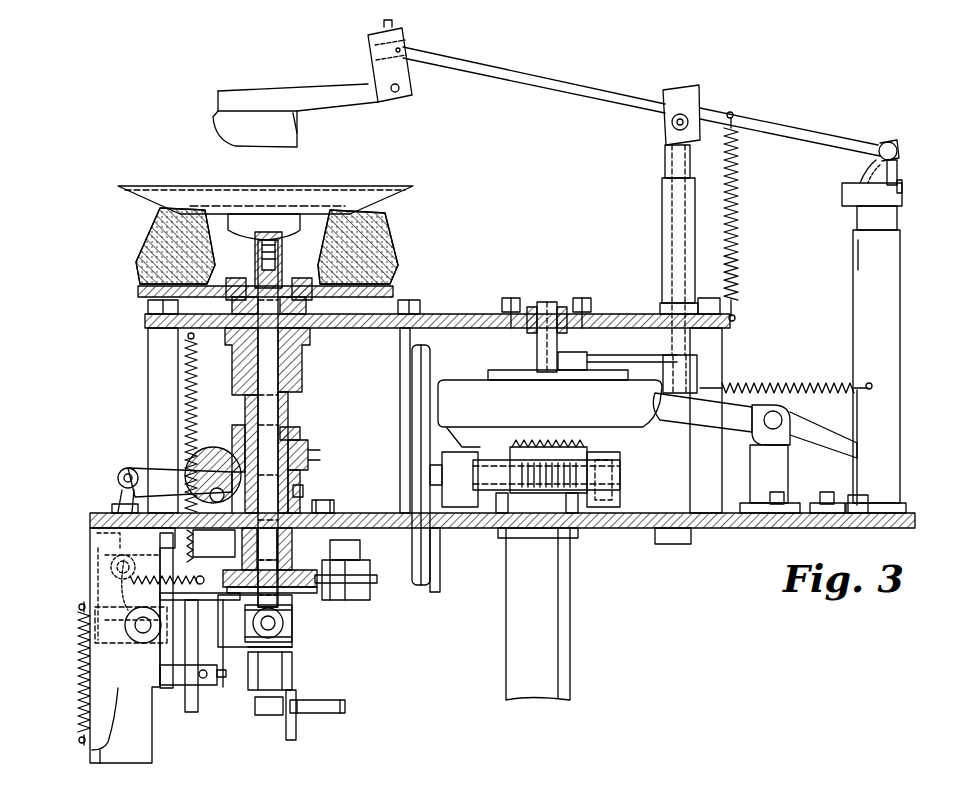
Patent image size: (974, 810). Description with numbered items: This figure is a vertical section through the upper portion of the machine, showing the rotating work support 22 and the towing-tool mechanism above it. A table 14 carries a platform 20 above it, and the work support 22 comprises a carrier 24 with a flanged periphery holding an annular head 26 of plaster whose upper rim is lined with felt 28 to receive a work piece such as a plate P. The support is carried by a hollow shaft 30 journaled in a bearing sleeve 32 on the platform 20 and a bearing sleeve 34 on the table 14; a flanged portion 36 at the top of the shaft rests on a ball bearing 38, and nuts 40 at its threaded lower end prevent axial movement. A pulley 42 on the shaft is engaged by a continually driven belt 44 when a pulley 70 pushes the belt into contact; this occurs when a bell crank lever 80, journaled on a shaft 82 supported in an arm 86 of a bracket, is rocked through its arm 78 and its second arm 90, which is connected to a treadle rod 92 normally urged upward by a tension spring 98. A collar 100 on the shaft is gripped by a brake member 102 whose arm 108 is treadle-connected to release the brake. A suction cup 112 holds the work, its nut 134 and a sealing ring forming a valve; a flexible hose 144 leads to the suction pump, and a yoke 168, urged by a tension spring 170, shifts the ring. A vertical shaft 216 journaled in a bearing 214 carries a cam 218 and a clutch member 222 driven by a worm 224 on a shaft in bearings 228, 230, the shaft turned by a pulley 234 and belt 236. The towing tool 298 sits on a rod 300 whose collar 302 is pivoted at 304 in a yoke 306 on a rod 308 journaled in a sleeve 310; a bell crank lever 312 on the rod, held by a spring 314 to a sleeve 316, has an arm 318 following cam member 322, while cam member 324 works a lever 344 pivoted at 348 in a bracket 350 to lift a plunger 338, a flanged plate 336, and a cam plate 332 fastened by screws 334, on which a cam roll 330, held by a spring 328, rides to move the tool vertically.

The table 14 is at (665, 530).
The platform 20 is at (437, 316).
The work support 22 is at (417, 252).
The carrier 24 is at (385, 296).
The annular head 26 is at (145, 242).
The felt 28 is at (388, 226).
The hollow shaft 30 is at (290, 410).
The bearing sleeve 32 is at (305, 372).
The bearing sleeve 34 is at (302, 498).
The flanged portion 36 is at (302, 314).
The ball bearing 38 is at (163, 420).
The nuts 40 is at (328, 510).
The pulley 42 is at (238, 564).
The belt 44 is at (318, 645).
The pulley 70 is at (355, 596).
The arm 78 is at (96, 590).
The bell crank lever 80 is at (132, 645).
The shaft 82 is at (142, 640).
The arm 86 is at (105, 565).
The second arm 90 is at (143, 632).
The treadle rod 92 is at (195, 705).
The tension spring 98 is at (196, 402).
The collar 100 is at (300, 450).
The brake member 102 is at (210, 458).
The arm 108 is at (140, 470).
The suction cup 112 is at (300, 212).
The nut 134 is at (295, 681).
The flexible hose 144 is at (325, 716).
The yoke 168 is at (203, 654).
The tension spring 170 is at (78, 685).
The bearing 214 is at (561, 305).
The vertical shaft 216 is at (545, 337).
The cam 218 is at (461, 367).
The clutch member 222 is at (520, 470).
The worm 224 is at (538, 614).
The bearing 228 is at (450, 456).
The bearing 230 is at (612, 500).
The pulley 234 is at (410, 430).
The belt 236 is at (441, 566).
The towing tool 298 is at (262, 86).
The rod 300 is at (590, 88).
The collar 302 is at (671, 90).
The pivot 304 is at (690, 118).
The yoke 306 is at (664, 142).
The rod 308 is at (668, 162).
The sleeve 310 is at (662, 232).
The bell crank lever 312 is at (700, 378).
The spring 314 is at (786, 388).
The sleeve 316 is at (897, 360).
The arm 318 is at (612, 356).
The cam member 322 is at (488, 382).
The cam member 324 is at (642, 418).
The spring 328 is at (738, 262).
The cam roll 330 is at (894, 146).
The cam plate 332 is at (900, 175).
The screws 334 is at (880, 178).
The flanged plate 336 is at (905, 197).
The plunger 338 is at (898, 215).
The lever 344 is at (823, 435).
The pivot 348 is at (782, 420).
The bracket 350 is at (788, 480).
The plate P is at (378, 205).